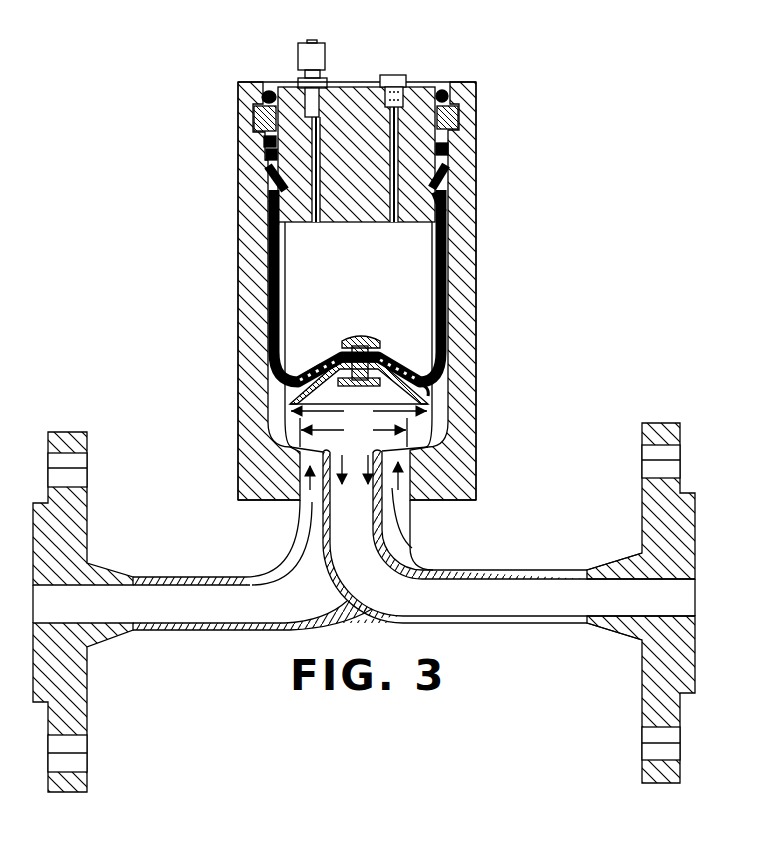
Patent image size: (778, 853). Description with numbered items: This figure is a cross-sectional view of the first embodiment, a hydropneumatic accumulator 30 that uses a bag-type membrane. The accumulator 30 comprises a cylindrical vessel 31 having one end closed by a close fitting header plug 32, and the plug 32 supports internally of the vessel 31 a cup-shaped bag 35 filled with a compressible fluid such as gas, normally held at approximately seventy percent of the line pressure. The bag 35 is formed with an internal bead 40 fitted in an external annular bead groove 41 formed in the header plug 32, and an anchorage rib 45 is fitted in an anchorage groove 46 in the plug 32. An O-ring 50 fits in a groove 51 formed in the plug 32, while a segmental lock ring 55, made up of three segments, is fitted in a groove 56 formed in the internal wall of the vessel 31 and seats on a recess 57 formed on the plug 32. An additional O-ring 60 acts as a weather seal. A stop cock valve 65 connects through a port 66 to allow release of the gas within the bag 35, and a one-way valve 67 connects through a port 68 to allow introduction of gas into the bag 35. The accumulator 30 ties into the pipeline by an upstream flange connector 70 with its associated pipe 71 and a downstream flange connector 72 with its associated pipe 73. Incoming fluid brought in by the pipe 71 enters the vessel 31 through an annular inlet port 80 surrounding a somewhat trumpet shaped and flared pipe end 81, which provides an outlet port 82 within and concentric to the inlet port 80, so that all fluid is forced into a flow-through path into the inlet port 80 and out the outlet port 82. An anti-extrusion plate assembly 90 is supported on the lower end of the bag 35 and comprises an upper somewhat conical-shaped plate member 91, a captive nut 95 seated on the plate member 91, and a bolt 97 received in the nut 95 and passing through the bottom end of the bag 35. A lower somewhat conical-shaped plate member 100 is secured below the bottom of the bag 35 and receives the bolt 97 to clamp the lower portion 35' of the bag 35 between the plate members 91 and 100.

The hydropneumatic accumulator 30 is at (492, 248).
The cylindrical vessel 31 is at (238, 314).
The header plug 32 is at (364, 224).
The cup-shaped bag 35 is at (357, 286).
The lower portion of bag 35' is at (305, 347).
The internal bead 40 is at (449, 176).
The external annular bead groove 41 is at (451, 196).
The anchorage rib 45 is at (268, 200).
The anchorage groove 46 is at (277, 220).
The O-ring 50 is at (449, 149).
The O-ring groove 51 is at (449, 135).
The segmental lock ring 55 is at (256, 120).
The lock ring groove 56 is at (264, 137).
The recess 57 is at (268, 152).
The additional O-ring 60 is at (268, 90).
The stop cock valve 65 is at (327, 66).
The release port 66 is at (317, 226).
The one-way valve 67 is at (395, 76).
The inlet port for gas 68 is at (395, 224).
The upstream flange connector 70 is at (108, 558).
The upstream pipe 71 is at (291, 522).
The downstream flange connector 72 is at (617, 548).
The downstream pipe 73 is at (457, 571).
The annular inlet port 80 is at (277, 542).
The flared pipe end 81 is at (433, 447).
The outlet port 82 is at (323, 443).
The anti-extrusion plate assembly 90 is at (342, 332).
The upper conical plate member 91 is at (395, 363).
The captive nut 95 is at (354, 341).
The bolt 97 is at (372, 377).
The lower conical plate member 100 is at (424, 396).